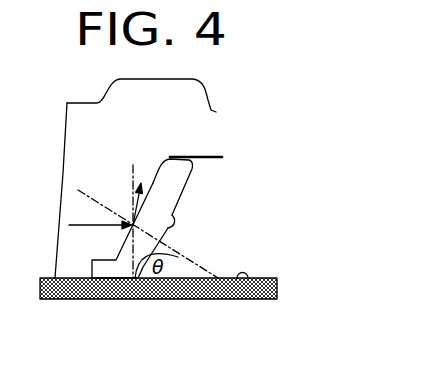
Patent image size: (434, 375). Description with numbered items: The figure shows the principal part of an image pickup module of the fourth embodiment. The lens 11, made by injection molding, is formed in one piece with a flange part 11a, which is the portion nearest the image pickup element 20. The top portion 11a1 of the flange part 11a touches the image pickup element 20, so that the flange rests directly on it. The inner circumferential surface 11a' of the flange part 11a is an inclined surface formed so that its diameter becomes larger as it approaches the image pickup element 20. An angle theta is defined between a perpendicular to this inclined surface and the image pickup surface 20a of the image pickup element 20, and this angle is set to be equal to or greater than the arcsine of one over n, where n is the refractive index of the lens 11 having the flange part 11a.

The lens 11 is at (163, 117).
The flange part 11a is at (160, 218).
The inner circumferential surface 11a' is at (244, 176).
The top portion 11a1 is at (75, 283).
The image pickup element 20 is at (151, 294).
The image pickup surface 20a is at (255, 299).